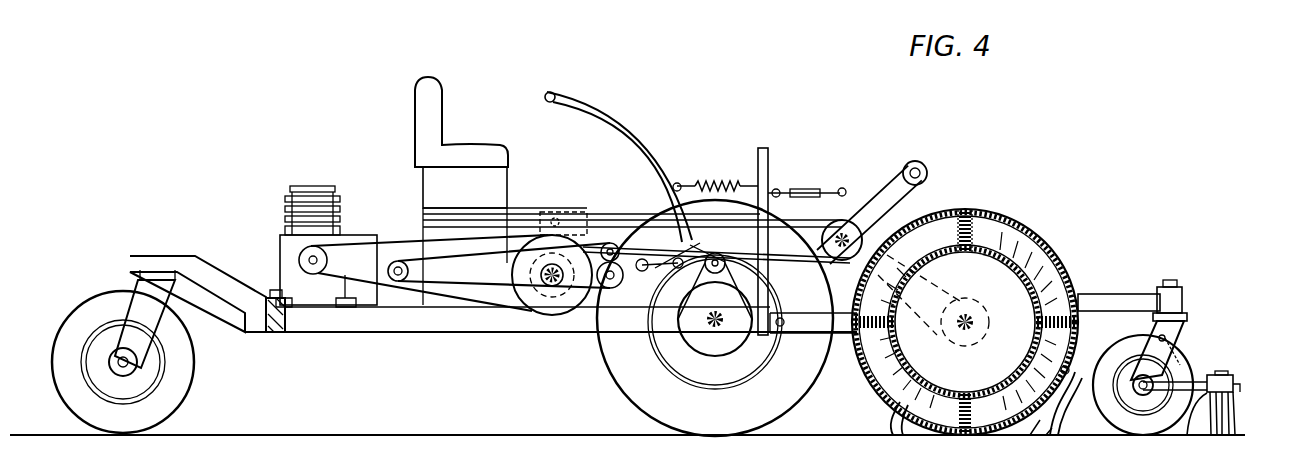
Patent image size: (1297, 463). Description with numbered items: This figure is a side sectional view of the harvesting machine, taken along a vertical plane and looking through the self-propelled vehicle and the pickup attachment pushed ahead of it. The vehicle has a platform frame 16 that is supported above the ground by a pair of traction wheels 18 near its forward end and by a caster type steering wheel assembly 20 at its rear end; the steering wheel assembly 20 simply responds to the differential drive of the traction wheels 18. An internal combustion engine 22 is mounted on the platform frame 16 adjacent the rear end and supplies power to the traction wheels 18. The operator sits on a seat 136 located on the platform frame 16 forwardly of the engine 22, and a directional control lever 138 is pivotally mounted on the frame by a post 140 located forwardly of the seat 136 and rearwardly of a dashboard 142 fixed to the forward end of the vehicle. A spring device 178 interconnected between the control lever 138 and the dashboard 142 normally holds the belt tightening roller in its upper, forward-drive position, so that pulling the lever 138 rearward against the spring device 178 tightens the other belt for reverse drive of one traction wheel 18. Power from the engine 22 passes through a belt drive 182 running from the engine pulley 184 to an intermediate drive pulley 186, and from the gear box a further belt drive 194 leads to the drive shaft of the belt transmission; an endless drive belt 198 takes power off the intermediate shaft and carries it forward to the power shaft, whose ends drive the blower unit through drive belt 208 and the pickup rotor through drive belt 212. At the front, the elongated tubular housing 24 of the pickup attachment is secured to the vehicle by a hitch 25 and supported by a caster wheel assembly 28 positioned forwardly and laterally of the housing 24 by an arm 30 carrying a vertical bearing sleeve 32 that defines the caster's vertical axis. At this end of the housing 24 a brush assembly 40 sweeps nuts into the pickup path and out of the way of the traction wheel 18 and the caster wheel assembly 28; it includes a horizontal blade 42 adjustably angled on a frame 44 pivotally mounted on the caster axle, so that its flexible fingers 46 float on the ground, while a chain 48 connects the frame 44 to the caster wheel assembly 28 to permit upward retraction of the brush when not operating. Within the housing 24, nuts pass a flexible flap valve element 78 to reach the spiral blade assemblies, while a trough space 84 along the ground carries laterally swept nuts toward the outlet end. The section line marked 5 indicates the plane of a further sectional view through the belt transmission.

The platform frame 16 is at (398, 320).
The traction wheels 18 is at (658, 417).
The caster type steering wheel assembly 20 is at (160, 250).
The internal combustion engine 22 is at (277, 265).
The tubular housing 24 is at (1029, 224).
The hitch 25 is at (840, 333).
The caster wheel assembly 28 is at (1186, 320).
The arm 30 is at (1102, 294).
The vertical bearing sleeve 32 is at (1175, 297).
The brush assembly 40 is at (1246, 400).
The horizontal blade 42 is at (1237, 393).
The frame 44 is at (1197, 384).
The flexible fingers 46 is at (1192, 438).
The chain 48 is at (1173, 358).
The flap valve element 78 is at (1070, 398).
The trough space 84 is at (1034, 422).
The seat 136 is at (432, 112).
The directional control lever 138 is at (617, 118).
The post 140 is at (677, 287).
The dashboard 142 is at (763, 148).
The spring device 178 is at (712, 170).
The belt drive 182 is at (366, 243).
The engine pulley 184 is at (280, 262).
The intermediate drive pulley 186 is at (545, 305).
The belt drive 194 is at (483, 283).
The endless drive belt 198 is at (600, 213).
The drive belt 208 is at (872, 186).
The drive belt 212 is at (915, 218).
The section line 5- 5 is at (718, 207).